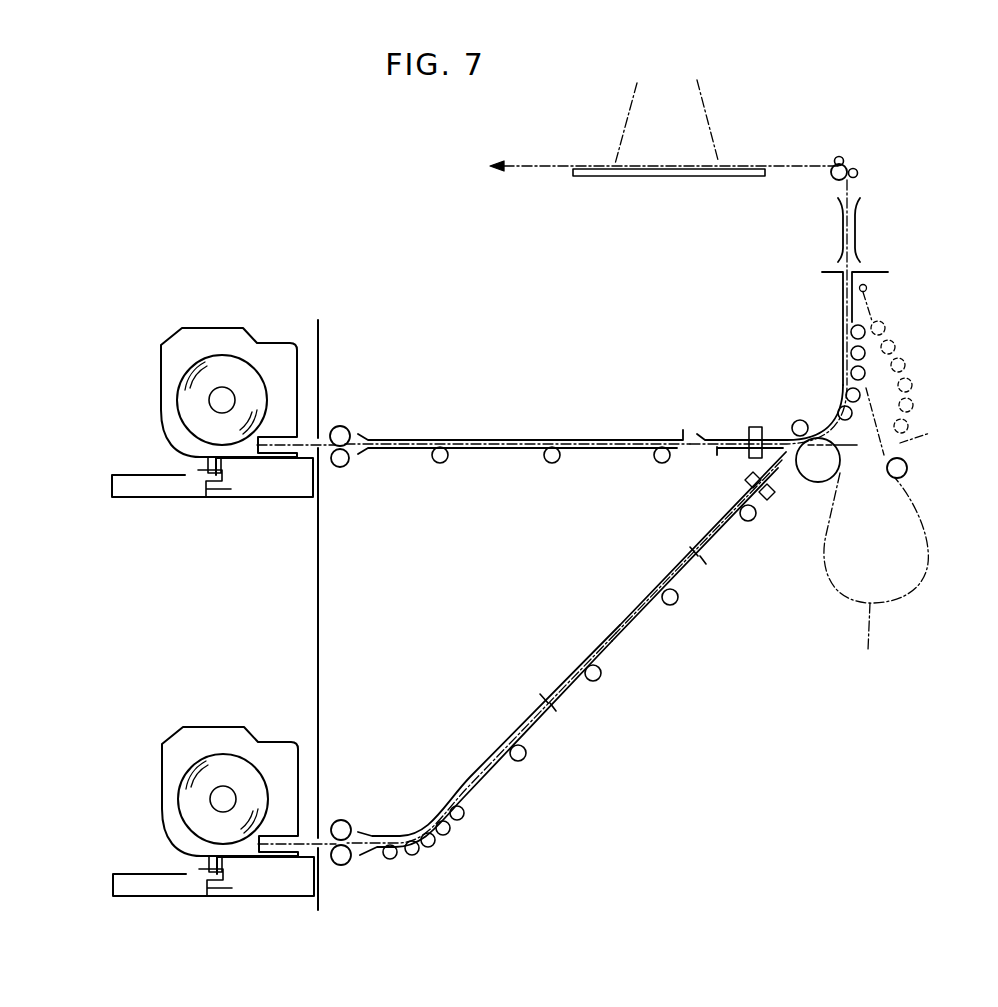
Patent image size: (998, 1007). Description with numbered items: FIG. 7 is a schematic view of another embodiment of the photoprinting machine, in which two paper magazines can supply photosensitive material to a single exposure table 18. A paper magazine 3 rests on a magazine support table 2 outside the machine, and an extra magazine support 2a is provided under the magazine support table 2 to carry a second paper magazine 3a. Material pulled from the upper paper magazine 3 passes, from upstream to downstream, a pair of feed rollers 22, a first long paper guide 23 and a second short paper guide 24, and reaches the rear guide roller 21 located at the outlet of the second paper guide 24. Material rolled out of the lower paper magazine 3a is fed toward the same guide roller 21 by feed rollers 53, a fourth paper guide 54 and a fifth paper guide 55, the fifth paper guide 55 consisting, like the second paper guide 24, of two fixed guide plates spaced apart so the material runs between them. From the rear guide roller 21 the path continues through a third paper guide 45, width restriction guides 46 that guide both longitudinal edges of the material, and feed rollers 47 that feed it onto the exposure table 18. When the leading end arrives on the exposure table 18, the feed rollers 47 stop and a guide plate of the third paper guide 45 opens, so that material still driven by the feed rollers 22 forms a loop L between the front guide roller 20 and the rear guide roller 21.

The magazine support table 2 is at (130, 475).
The extra magazine support 2a is at (184, 856).
The paper magazine 3 is at (182, 328).
The second paper magazine 3a is at (234, 755).
The exposure table 18 is at (633, 177).
The front guide roller 20 is at (909, 469).
The rear guide roller 21 is at (813, 473).
The feed rollers 22 is at (350, 416).
The first long paper guide 23 is at (487, 437).
The second short paper guide 24 is at (717, 437).
The third paper guide 45 is at (841, 321).
The width restriction guides 46 is at (857, 222).
The feed rollers 47 is at (851, 164).
The feed rollers 53 is at (345, 815).
The fourth paper guide 54 is at (473, 768).
The fifth paper guide 55 is at (712, 527).
The loop L is at (876, 580).